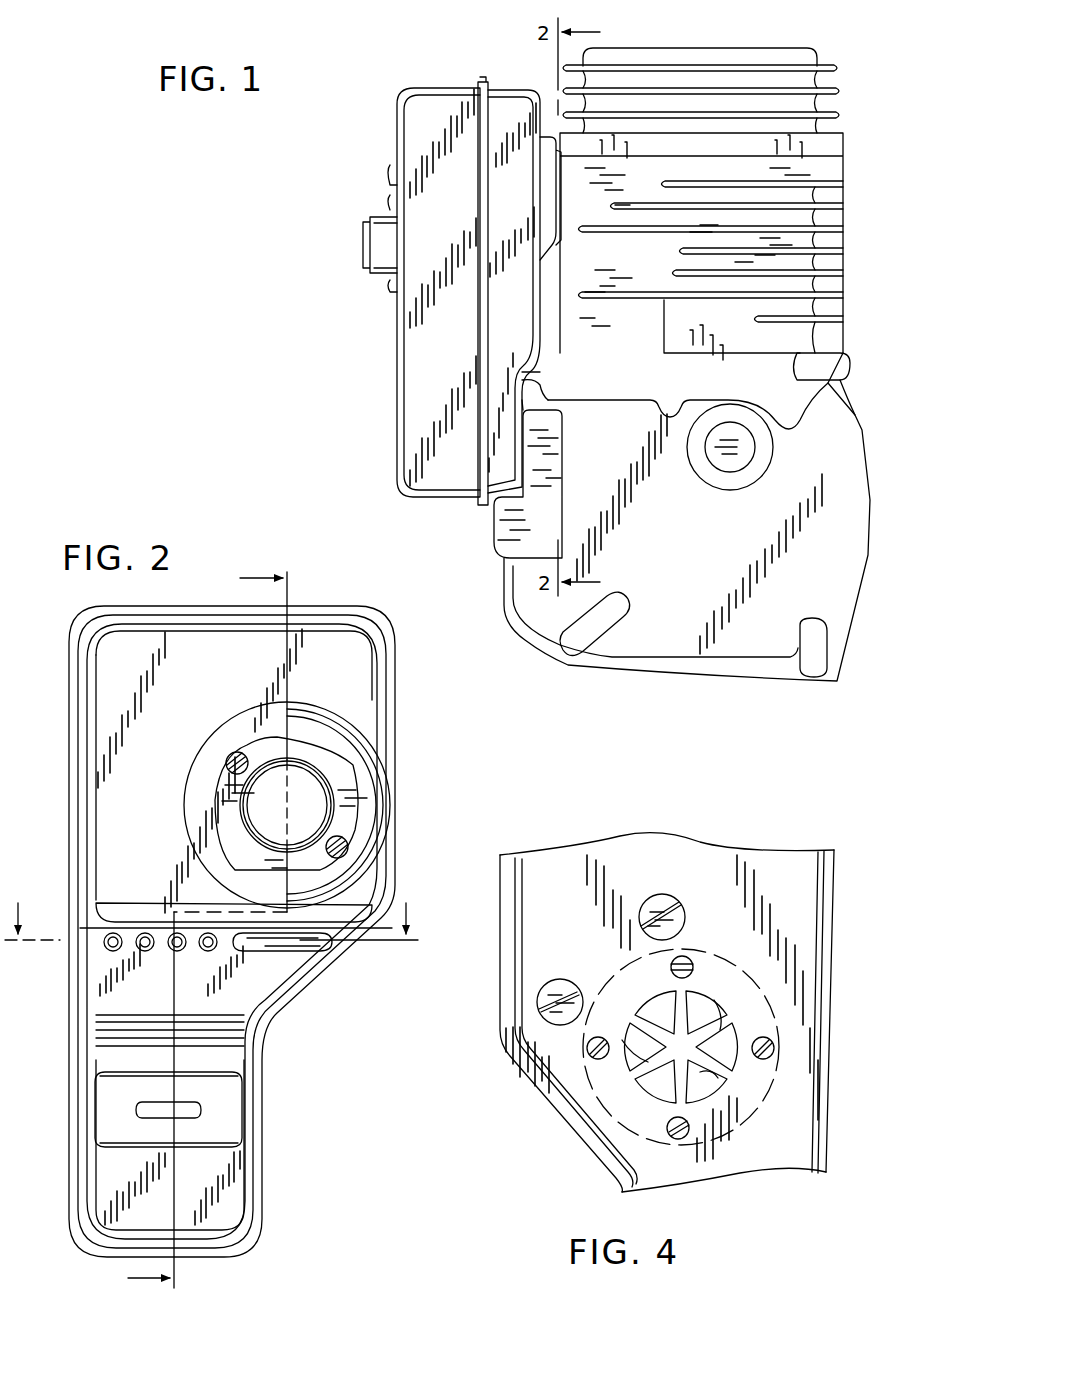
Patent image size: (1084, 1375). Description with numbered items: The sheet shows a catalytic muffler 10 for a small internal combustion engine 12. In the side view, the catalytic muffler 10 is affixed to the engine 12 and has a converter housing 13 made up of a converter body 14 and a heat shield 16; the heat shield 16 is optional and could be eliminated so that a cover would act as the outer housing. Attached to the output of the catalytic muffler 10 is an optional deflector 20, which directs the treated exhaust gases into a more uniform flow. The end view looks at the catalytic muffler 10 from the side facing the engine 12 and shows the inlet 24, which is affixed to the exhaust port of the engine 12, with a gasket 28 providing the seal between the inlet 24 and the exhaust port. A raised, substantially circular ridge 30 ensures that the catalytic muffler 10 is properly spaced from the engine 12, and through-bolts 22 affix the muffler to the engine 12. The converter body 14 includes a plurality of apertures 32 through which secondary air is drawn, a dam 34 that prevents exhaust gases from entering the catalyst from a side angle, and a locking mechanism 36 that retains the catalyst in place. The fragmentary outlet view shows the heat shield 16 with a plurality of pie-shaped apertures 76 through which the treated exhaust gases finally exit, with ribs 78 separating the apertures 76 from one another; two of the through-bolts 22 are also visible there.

In FIG. 1, the catalytic muffler 10 is at (388, 362).
In FIG. 2, the catalytic muffler 10 is at (400, 690).
In FIG. 1, the small internal combustion engine 12 is at (683, 56).
In FIG. 1, the converter housing 13 is at (396, 135).
In FIG. 1, the converter body 14 is at (508, 105).
In FIG. 2, the converter body 14 is at (194, 683).
In FIG. 1, the heat shield 16 is at (430, 100).
In FIG. 4, the heat shield 16 is at (681, 871).
In FIG. 1, the deflector 20 is at (380, 225).
In FIG. 2, the through-bolts 22 is at (237, 750).
In FIG. 4, the through-bolts 22 is at (560, 987).
In FIG. 2, the inlet 24 is at (330, 811).
In FIG. 2, the gasket 28 is at (338, 772).
In FIG. 2, the raised, substantially circular ridge 30 is at (212, 748).
In FIG. 2, the apertures 32 is at (208, 950).
In FIG. 2, the dam 34 is at (276, 960).
In FIG. 2, the locking mechanism 36 is at (228, 1093).
In FIG. 4, the pie-shaped apertures 76 is at (707, 1007).
In FIG. 4, the ribs 78 is at (648, 1058).